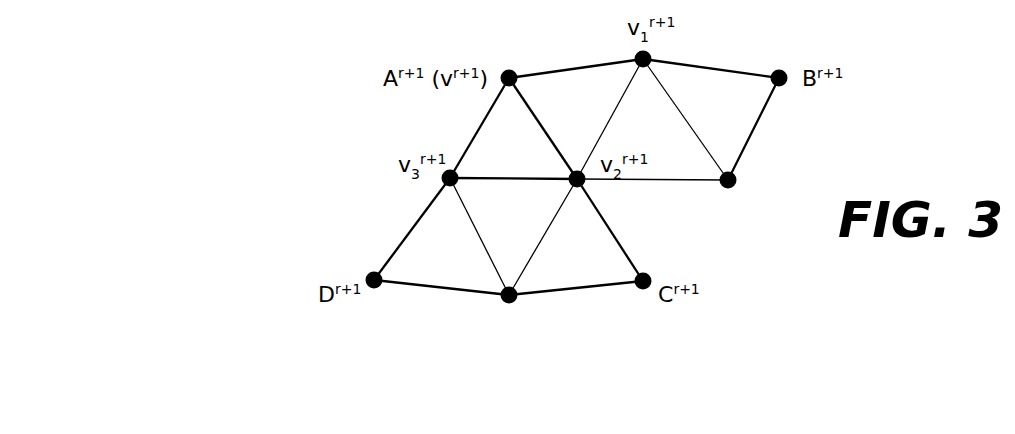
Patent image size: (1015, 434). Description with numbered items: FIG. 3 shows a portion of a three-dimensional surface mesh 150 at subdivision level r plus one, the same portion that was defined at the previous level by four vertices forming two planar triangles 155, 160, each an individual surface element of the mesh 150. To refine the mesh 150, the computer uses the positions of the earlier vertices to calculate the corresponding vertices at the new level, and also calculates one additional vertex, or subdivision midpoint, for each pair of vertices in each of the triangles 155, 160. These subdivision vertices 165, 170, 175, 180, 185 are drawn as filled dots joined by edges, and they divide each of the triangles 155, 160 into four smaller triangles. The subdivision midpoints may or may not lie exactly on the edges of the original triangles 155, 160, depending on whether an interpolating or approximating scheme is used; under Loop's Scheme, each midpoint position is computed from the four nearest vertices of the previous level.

The 3D surface mesh 150 is at (305, 127).
The triangle 155 is at (463, 291).
The triangle 160 is at (716, 68).
The subdivision vertex 165 is at (637, 55).
The subdivision vertex 170 is at (570, 176).
The subdivision vertex 175 is at (443, 184).
The subdivision vertex 180 is at (735, 173).
The subdivision vertex 185 is at (515, 302).